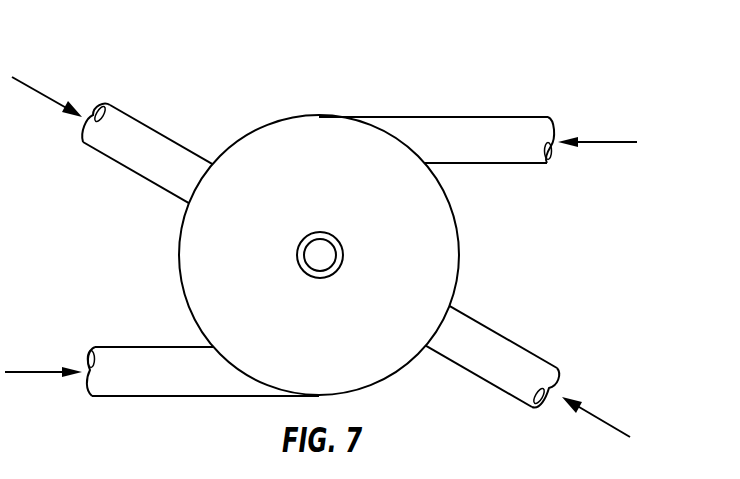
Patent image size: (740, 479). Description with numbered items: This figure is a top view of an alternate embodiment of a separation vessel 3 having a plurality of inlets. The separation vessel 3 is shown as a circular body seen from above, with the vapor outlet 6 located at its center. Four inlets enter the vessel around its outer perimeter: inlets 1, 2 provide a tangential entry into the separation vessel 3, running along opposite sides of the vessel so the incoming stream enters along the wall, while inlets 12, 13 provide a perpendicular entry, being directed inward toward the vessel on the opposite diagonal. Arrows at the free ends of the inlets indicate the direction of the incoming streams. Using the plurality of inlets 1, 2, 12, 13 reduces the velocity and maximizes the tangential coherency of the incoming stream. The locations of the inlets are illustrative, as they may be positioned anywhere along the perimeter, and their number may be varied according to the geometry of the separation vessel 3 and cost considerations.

The inlet 1 is at (203, 347).
The inlet 2 is at (436, 116).
The separation vessel 3 is at (319, 238).
The vapor outlet 6 is at (339, 234).
The inlet 12 is at (135, 156).
The inlet 13 is at (503, 353).